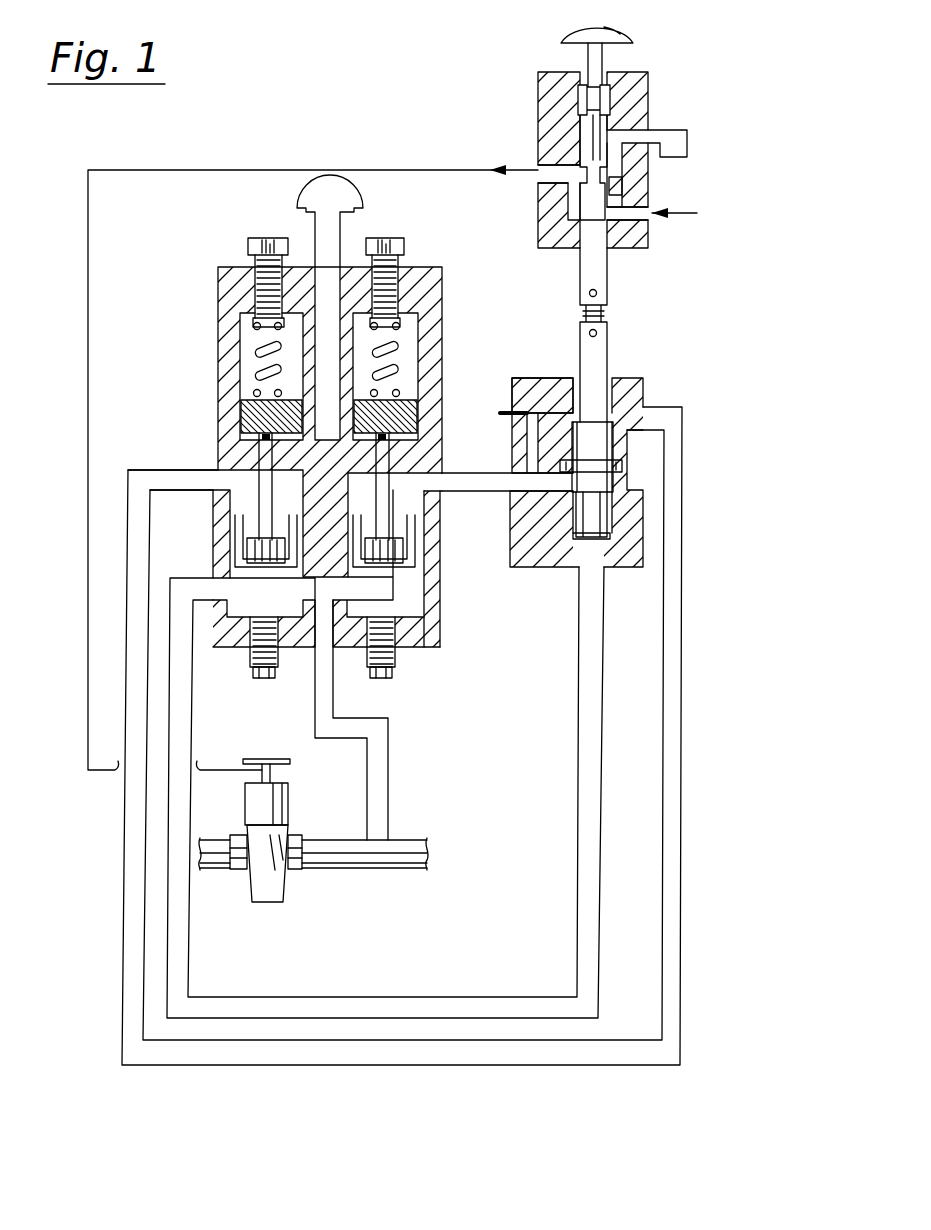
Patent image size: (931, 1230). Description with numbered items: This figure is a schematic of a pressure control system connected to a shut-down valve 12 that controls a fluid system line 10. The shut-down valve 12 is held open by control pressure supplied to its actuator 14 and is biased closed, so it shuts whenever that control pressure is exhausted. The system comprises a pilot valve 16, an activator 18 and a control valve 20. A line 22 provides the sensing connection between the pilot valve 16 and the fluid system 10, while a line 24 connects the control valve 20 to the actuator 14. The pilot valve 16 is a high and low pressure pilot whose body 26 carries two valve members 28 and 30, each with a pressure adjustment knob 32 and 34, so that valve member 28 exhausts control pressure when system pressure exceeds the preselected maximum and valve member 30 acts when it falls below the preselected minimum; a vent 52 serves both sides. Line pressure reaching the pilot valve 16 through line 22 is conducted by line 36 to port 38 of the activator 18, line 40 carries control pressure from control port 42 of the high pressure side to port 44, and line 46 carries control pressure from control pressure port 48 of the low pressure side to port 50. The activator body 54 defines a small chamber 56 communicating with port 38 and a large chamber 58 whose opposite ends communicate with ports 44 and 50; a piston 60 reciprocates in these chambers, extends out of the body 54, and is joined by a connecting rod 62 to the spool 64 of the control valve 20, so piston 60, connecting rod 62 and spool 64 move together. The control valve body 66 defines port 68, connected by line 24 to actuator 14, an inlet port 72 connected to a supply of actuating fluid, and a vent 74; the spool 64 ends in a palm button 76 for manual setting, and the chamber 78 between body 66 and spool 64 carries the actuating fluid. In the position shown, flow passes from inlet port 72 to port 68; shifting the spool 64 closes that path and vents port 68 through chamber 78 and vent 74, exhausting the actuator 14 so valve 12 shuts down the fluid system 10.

The line 10 is at (223, 872).
The shut-down valve 12 is at (268, 896).
The actuator 14 is at (292, 800).
The pilot valve 16 is at (214, 348).
The activator 18 is at (635, 574).
The control valve 20 is at (603, 154).
The line 22 is at (389, 740).
The line 24 is at (88, 258).
The body 26 is at (240, 408).
The valve member 28 is at (250, 553).
The valve member 30 is at (398, 558).
The pressure adjustment knob 32 is at (262, 238).
The pressure adjustment knob 34 is at (395, 240).
The line 36 is at (193, 736).
The port 38 is at (582, 570).
The line 40 is at (122, 935).
The control port 42 is at (216, 470).
The port 44 is at (663, 408).
The line 46 is at (507, 499).
The control pressure port 48 is at (444, 471).
The port 50 is at (497, 494).
The vent 52 is at (361, 186).
The body 54 is at (545, 378).
The small chamber 56 is at (604, 512).
The large chamber 58 is at (620, 454).
The piston 60 is at (602, 458).
The connecting rod 62 is at (604, 320).
The spool 64 is at (597, 128).
The body 66 is at (560, 80).
The port 68 is at (540, 168).
The inlet port 72 is at (644, 219).
The vent 74 is at (690, 135).
The palm button 76 is at (625, 32).
The chamber 78 is at (624, 184).